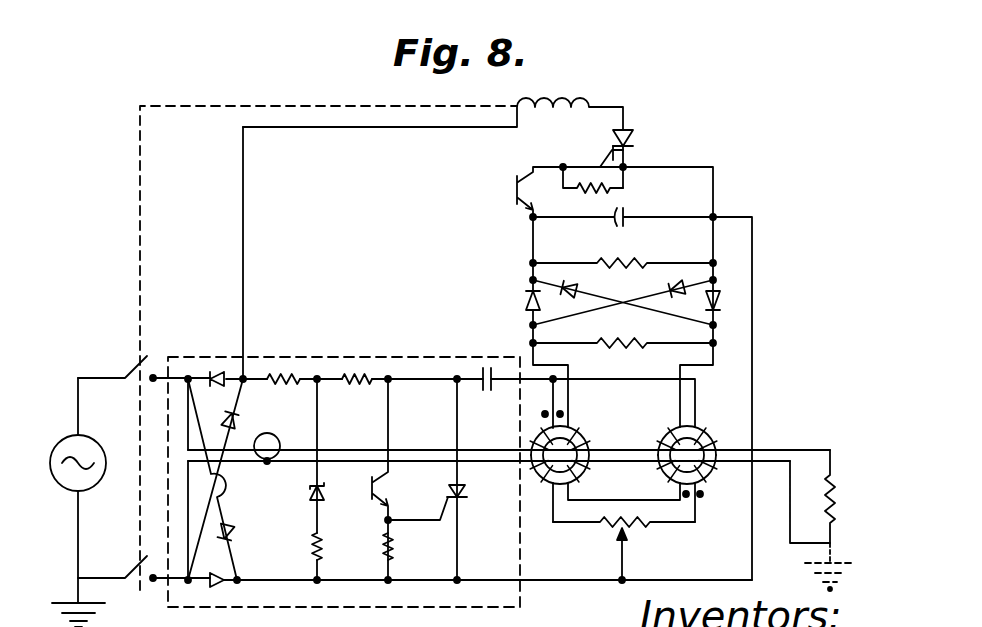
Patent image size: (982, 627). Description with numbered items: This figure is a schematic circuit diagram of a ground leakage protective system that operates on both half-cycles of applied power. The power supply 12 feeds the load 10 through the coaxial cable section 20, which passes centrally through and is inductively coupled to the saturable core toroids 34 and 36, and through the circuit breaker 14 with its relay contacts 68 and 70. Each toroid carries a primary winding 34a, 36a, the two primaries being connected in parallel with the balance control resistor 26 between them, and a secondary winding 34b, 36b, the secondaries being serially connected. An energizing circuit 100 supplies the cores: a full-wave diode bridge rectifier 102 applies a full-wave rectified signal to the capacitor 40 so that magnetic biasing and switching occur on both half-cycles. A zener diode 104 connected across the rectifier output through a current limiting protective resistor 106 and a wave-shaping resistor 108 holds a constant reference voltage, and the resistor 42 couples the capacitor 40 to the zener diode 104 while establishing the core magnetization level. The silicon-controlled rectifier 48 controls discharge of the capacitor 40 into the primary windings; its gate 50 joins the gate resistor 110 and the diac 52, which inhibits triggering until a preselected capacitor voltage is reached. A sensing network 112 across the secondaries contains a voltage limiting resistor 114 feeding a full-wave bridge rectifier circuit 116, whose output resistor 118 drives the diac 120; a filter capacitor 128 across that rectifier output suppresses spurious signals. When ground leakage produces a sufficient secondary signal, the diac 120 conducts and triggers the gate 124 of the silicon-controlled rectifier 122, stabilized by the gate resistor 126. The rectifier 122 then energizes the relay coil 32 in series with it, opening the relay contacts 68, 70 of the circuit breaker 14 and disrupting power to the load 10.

The load 10 is at (834, 498).
The power supply 12 is at (60, 440).
The circuit breaker 14 is at (135, 436).
The coaxial cable section 20 is at (284, 448).
The balance control resistor 26 is at (636, 530).
The relay coil 32 is at (572, 100).
The saturable core toroid 34 is at (552, 489).
The primary winding 34a is at (530, 447).
The secondary winding 34b is at (590, 430).
The saturable core toroid 36 is at (706, 487).
The primary winding 36a is at (708, 432).
The secondary winding 36b is at (666, 440).
The capacitor 40 is at (479, 393).
The resistor 42 is at (357, 393).
The silicon-controlled rectifier 48 is at (466, 489).
The gate 50 is at (441, 509).
The diac 52 is at (370, 496).
The relay contact 68 is at (132, 368).
The relay contact 70 is at (137, 572).
The energizing circuit 100 is at (400, 357).
The full-wave diode bridge rectifier 102 is at (247, 507).
The zener diode 104 is at (309, 498).
The current limiting protective resistor 106 is at (283, 393).
The wave-shaping resistor 108 is at (311, 550).
The gate resistor 110 is at (382, 550).
The sensing network 112 is at (508, 266).
The voltage limiting resistor 114 is at (626, 349).
The full-wave bridge rectifier circuit 116 is at (646, 297).
The output resistor 118 is at (628, 262).
The diac 120 is at (511, 190).
The silicon-controlled rectifier 122 is at (634, 142).
The gate 124 is at (600, 163).
The gate resistor 126 is at (603, 195).
The filter capacitor 128 is at (628, 216).